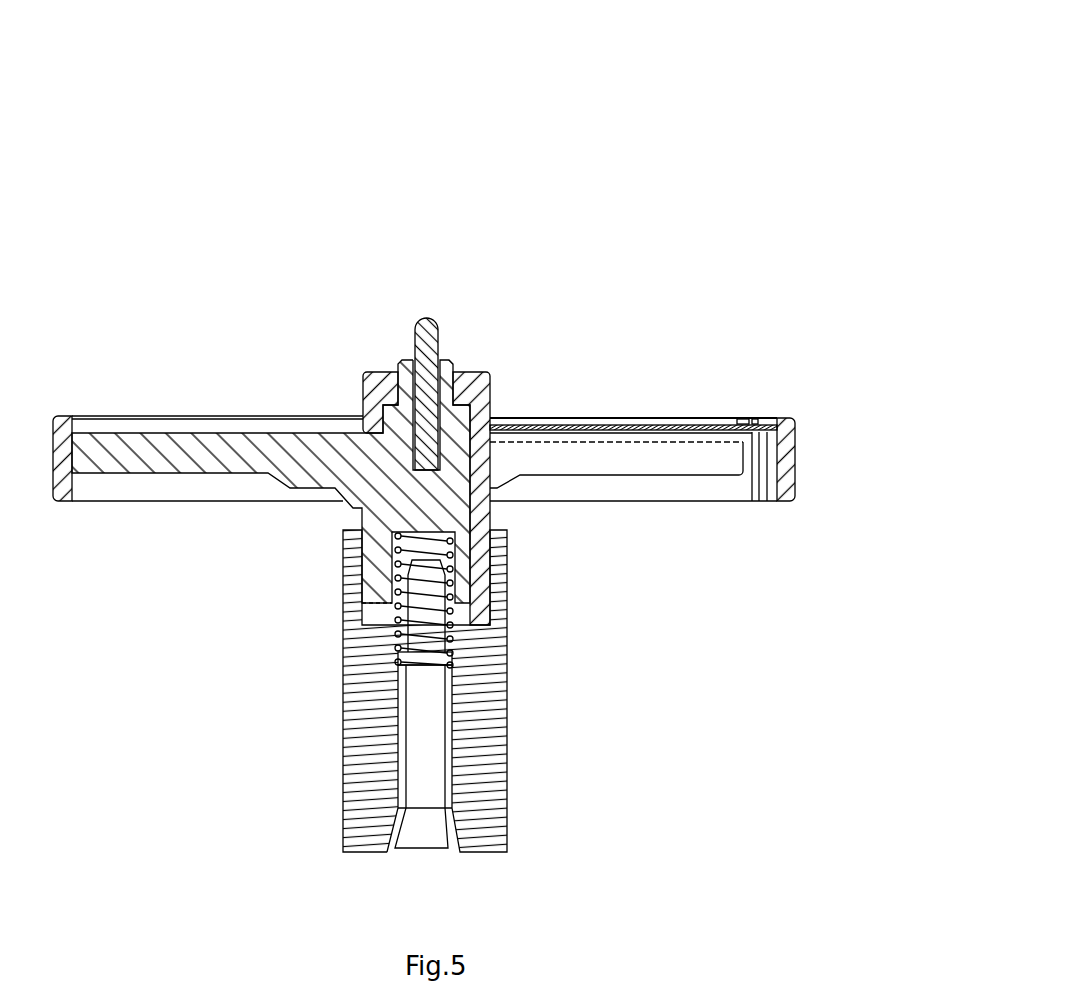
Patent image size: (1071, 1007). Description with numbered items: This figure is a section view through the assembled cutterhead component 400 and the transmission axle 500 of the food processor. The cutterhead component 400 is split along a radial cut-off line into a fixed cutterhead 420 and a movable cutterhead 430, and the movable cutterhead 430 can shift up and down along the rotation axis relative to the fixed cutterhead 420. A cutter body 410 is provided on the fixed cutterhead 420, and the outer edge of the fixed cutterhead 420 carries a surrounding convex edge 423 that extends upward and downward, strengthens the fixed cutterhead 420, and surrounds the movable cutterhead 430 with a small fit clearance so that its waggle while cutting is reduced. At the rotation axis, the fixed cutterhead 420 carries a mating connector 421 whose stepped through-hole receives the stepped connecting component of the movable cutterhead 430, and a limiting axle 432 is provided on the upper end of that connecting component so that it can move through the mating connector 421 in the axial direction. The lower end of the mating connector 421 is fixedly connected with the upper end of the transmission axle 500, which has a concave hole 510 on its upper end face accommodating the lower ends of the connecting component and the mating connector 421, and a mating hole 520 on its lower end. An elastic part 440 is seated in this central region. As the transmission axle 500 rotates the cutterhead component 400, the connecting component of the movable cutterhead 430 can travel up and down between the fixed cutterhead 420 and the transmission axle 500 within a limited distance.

The cutterhead component 400 is at (637, 243).
The cutter body 410 is at (617, 422).
The fixed cutterhead 420 is at (632, 468).
The mating connector 421 is at (493, 360).
The surrounding convex edge 423 is at (793, 472).
The movable cutterhead 430 is at (168, 473).
The limiting axle 432 is at (438, 305).
The elastic part 440 is at (452, 548).
The transmission axle 500 is at (537, 653).
The concave hole 510 is at (507, 609).
The mating hole 520 is at (447, 815).